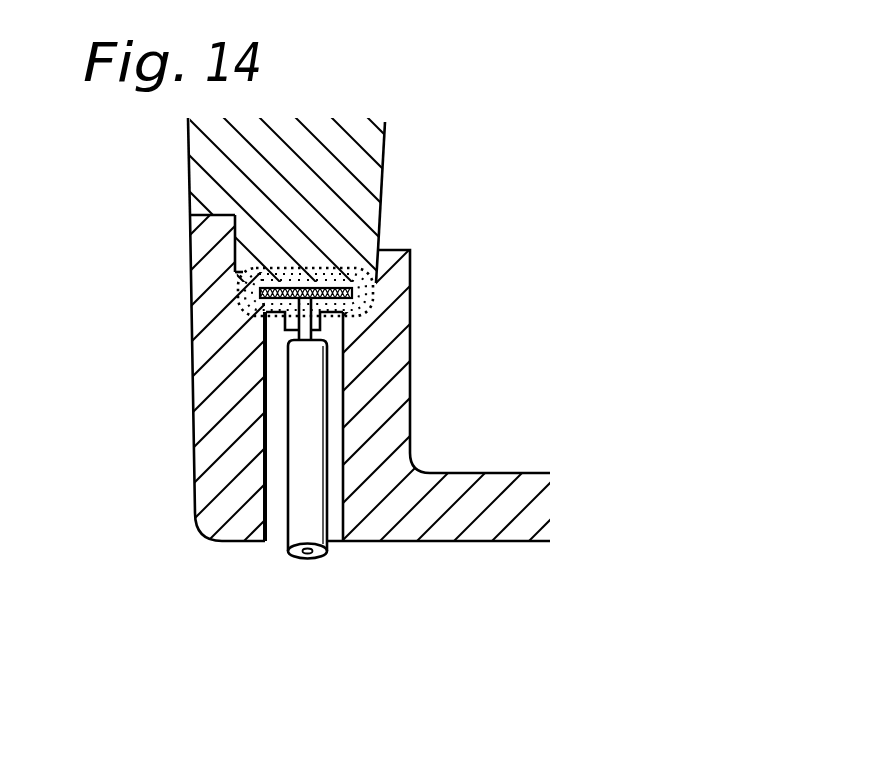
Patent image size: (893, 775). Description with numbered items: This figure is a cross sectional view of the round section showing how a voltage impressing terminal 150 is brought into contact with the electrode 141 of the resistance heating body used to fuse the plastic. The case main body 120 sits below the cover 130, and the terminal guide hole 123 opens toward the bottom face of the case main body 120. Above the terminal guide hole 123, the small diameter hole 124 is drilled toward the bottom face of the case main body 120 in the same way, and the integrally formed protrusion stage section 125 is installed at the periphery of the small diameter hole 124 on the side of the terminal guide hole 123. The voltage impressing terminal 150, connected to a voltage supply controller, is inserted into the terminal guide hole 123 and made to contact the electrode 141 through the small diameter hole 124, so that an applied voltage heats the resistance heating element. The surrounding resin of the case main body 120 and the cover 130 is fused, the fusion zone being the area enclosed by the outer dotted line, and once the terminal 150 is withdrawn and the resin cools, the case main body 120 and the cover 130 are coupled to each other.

The case main body 120 is at (380, 408).
The terminal guide hole 123 is at (275, 520).
The small diameter hole 124 is at (318, 323).
The protrusion stage section 125 is at (270, 331).
The cover 130 is at (353, 160).
The electrode 141 is at (337, 268).
The voltage impressing terminal 150 is at (310, 518).